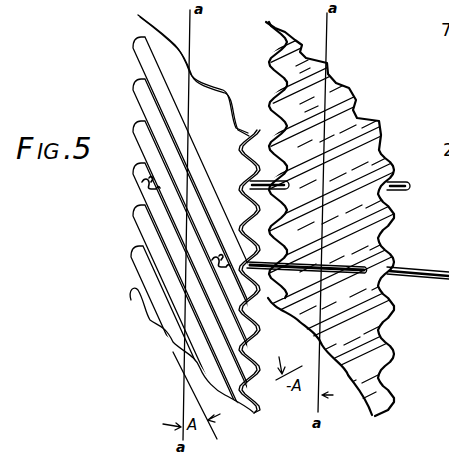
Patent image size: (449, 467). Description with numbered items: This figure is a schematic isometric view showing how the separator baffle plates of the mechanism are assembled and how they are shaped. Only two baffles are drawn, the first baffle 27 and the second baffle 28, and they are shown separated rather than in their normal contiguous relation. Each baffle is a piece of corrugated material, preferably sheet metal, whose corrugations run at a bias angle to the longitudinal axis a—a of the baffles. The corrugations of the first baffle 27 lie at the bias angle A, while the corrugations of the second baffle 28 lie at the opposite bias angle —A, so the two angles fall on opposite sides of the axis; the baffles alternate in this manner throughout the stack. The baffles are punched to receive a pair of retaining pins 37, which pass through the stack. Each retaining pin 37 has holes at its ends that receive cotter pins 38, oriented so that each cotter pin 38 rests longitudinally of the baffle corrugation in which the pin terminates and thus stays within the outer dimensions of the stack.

The first baffle 27 is at (140, 259).
The second baffle 28 is at (385, 313).
The retaining pins 37 is at (405, 193).
The cotter pins 38 is at (214, 256).